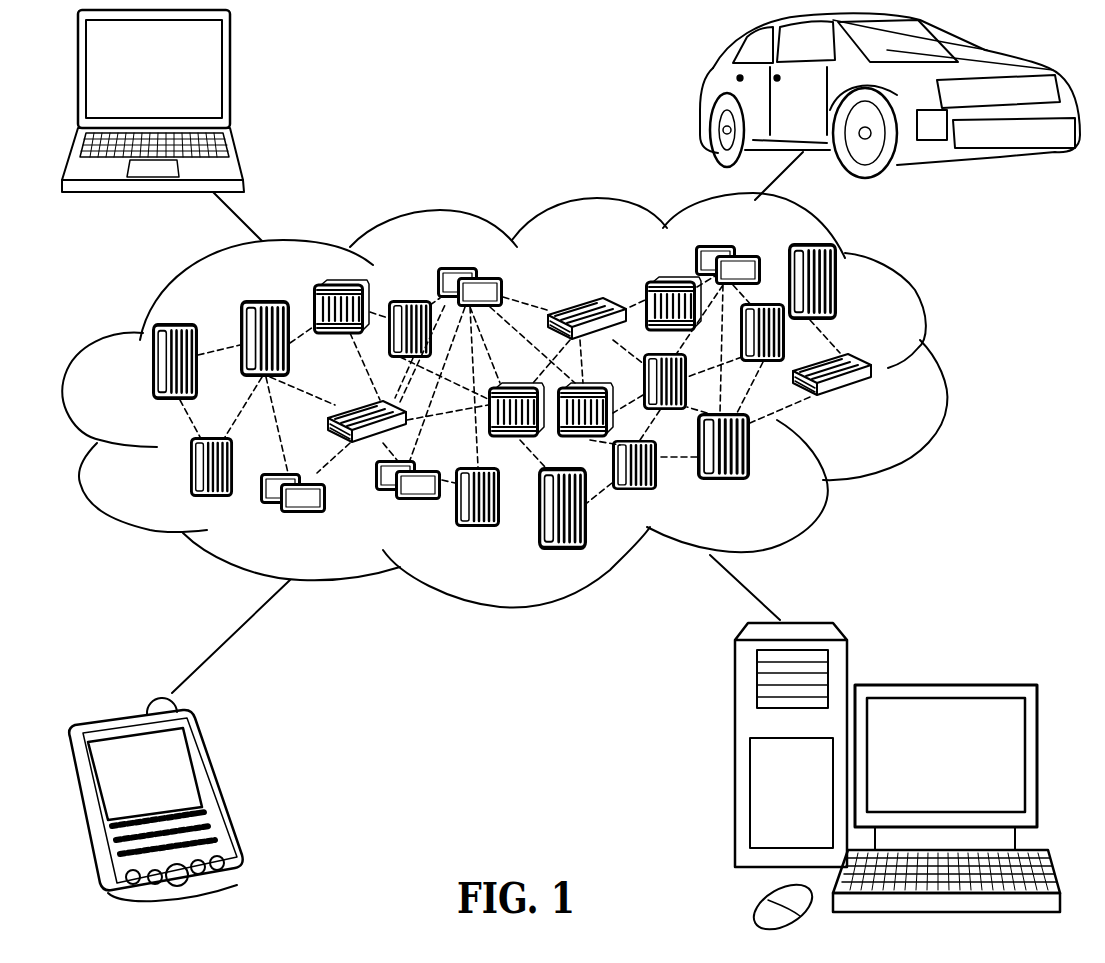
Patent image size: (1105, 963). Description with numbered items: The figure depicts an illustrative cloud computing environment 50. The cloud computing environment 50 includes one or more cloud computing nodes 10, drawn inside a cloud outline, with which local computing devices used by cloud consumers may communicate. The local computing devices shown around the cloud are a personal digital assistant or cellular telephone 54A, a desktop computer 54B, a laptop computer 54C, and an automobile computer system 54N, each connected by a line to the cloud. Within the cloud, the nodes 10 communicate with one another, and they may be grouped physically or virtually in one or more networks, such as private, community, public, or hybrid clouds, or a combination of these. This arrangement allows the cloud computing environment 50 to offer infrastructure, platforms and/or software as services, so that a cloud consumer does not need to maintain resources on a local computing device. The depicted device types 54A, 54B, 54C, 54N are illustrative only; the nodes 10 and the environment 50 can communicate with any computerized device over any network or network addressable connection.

The cloud computing environment 50 is at (942, 373).
The cloud computing nodes 10 is at (900, 412).
The personal digital assistant (PDA) or cellular telephone 54A is at (215, 788).
The desktop computer 54B is at (940, 683).
The laptop computer 54C is at (229, 80).
The automobile computer system 54N is at (705, 95).